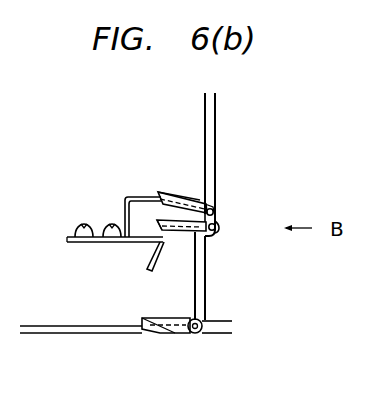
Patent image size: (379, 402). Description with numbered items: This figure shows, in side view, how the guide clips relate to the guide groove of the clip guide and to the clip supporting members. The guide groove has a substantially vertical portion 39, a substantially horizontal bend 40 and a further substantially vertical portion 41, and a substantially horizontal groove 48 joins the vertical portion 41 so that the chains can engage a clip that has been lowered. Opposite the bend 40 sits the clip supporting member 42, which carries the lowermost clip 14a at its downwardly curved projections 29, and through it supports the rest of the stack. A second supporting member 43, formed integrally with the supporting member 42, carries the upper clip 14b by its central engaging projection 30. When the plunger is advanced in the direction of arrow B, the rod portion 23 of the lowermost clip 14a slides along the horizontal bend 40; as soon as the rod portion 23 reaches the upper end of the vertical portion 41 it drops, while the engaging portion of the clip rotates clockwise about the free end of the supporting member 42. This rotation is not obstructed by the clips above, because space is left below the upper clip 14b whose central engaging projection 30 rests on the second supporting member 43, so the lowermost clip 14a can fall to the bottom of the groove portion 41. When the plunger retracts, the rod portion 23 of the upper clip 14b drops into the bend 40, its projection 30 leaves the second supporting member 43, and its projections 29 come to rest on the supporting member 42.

The lowermost clip 14a is at (190, 246).
The upper clip 14b is at (193, 201).
The rod portion 23 is at (213, 201).
The downwardly curved projections 29 is at (167, 243).
The central engaging projection 30 is at (163, 190).
The substantially vertical portion 39 is at (212, 138).
The substantially horizontal bend 40 is at (215, 222).
The substantially vertical portion 41 is at (197, 287).
The clip supporting member 42 is at (133, 246).
The second supporting member 43 is at (133, 195).
The substantially horizontal groove 48 is at (216, 337).